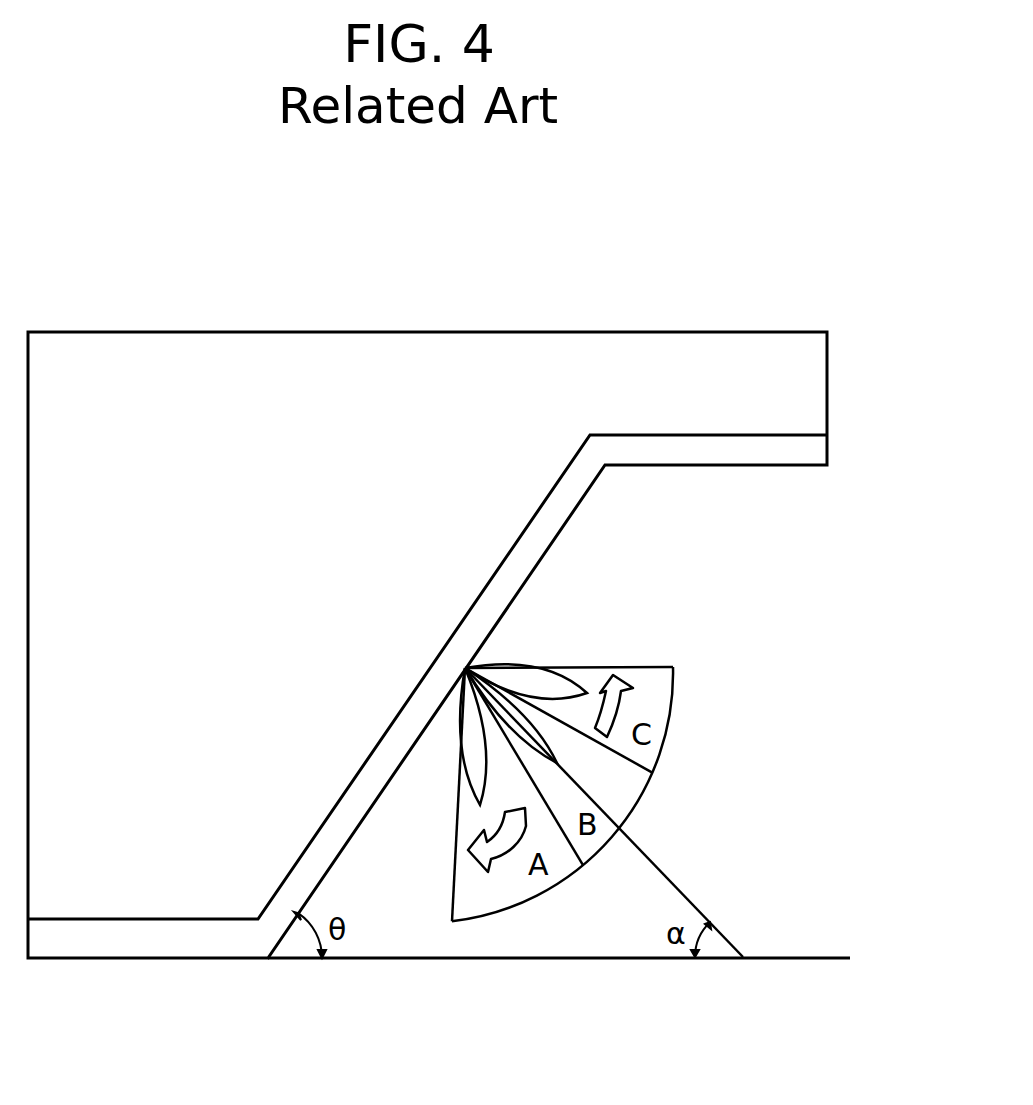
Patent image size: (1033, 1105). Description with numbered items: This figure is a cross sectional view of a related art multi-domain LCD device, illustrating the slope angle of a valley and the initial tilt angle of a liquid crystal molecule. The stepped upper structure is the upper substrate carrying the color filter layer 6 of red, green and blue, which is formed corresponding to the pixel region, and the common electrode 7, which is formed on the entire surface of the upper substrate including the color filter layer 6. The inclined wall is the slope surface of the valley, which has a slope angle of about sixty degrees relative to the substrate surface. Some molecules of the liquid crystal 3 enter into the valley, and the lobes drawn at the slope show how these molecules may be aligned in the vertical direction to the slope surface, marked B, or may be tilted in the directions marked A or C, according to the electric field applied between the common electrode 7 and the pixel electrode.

The liquid crystal 3 is at (526, 676).
The color filter layer 6 is at (817, 386).
The common electrode 7 is at (817, 449).